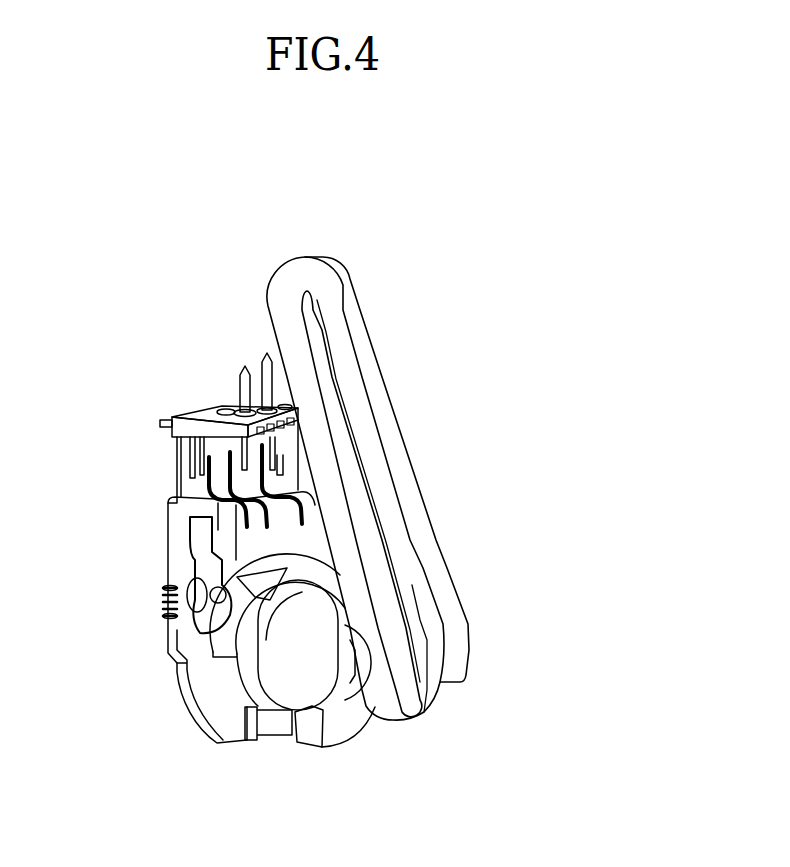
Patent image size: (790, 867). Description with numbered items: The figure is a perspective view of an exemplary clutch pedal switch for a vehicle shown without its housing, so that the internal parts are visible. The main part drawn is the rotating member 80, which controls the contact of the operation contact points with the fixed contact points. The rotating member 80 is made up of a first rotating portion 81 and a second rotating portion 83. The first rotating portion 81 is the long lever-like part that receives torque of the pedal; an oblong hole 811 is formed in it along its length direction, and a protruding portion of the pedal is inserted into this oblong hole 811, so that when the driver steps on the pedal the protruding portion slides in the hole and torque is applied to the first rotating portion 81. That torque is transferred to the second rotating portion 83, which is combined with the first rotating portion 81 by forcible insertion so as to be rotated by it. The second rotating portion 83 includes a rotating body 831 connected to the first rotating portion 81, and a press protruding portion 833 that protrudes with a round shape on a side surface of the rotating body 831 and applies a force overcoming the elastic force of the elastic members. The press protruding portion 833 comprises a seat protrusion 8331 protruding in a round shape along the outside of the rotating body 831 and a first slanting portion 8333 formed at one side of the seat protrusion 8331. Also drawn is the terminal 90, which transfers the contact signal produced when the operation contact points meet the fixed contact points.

The rotating member 80 is at (422, 818).
The first rotating portion 81 is at (368, 538).
The oblong hole 811 is at (343, 352).
The second rotating portion 83 is at (206, 586).
The rotating body 831 is at (292, 672).
The press protruding portion 833 is at (134, 579).
The seat protrusion 8331 is at (228, 617).
The first slanting portion 8333 is at (228, 573).
The terminal 90 is at (196, 456).